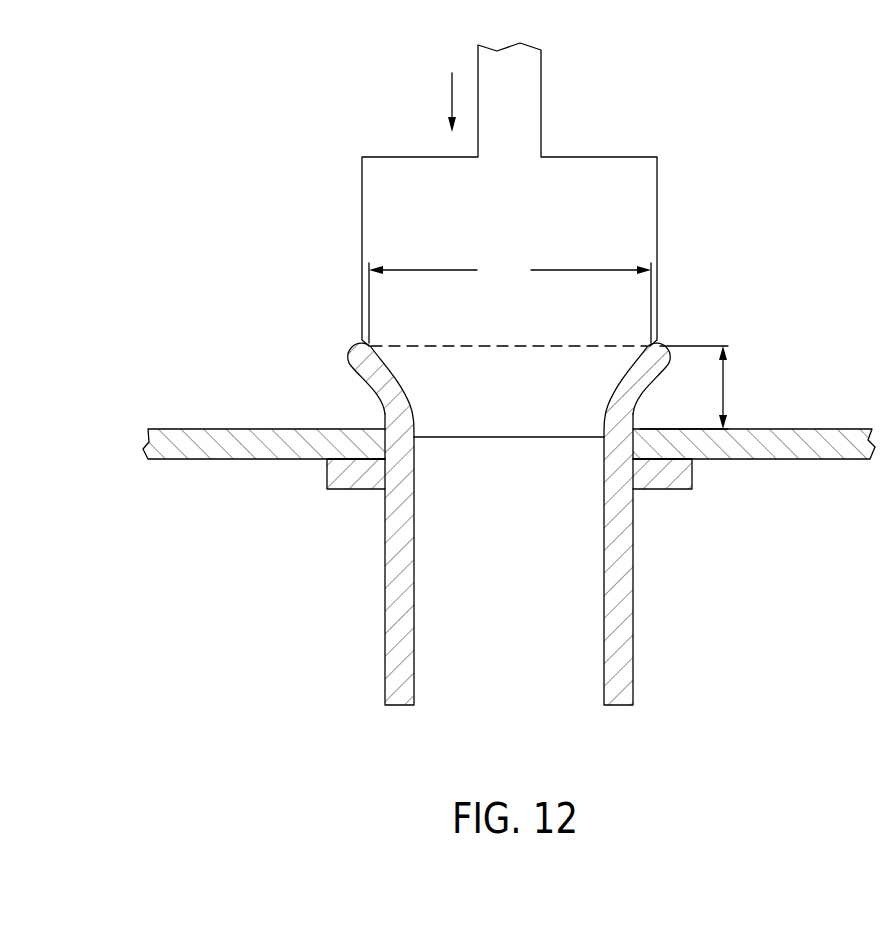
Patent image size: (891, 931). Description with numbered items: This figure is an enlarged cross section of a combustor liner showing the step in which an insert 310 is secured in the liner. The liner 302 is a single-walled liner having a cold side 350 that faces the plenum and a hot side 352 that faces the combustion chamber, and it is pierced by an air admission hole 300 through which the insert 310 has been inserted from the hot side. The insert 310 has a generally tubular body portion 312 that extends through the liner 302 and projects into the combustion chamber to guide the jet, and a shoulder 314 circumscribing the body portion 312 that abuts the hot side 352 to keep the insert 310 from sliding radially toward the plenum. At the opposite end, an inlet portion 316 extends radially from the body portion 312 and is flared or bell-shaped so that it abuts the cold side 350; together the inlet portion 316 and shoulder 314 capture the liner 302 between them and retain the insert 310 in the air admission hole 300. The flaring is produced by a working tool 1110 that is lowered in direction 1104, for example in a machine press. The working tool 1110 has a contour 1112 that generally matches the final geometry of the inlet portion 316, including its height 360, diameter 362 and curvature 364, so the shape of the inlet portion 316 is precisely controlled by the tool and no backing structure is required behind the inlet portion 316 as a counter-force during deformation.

The air admission hole 300 is at (502, 524).
The liner 302 is at (502, 446).
The insert 310 is at (465, 524).
The body portion 312 is at (385, 558).
The shoulder 314 is at (327, 487).
The inlet portion 316 is at (350, 374).
The cold side 350 is at (226, 429).
The hot side 352 is at (224, 459).
The height 360 is at (724, 385).
The diameter 362 is at (510, 300).
The curvature 364 is at (366, 391).
The direction 1104 is at (452, 101).
The working tool 1110 is at (545, 240).
The contour 1112 is at (628, 370).